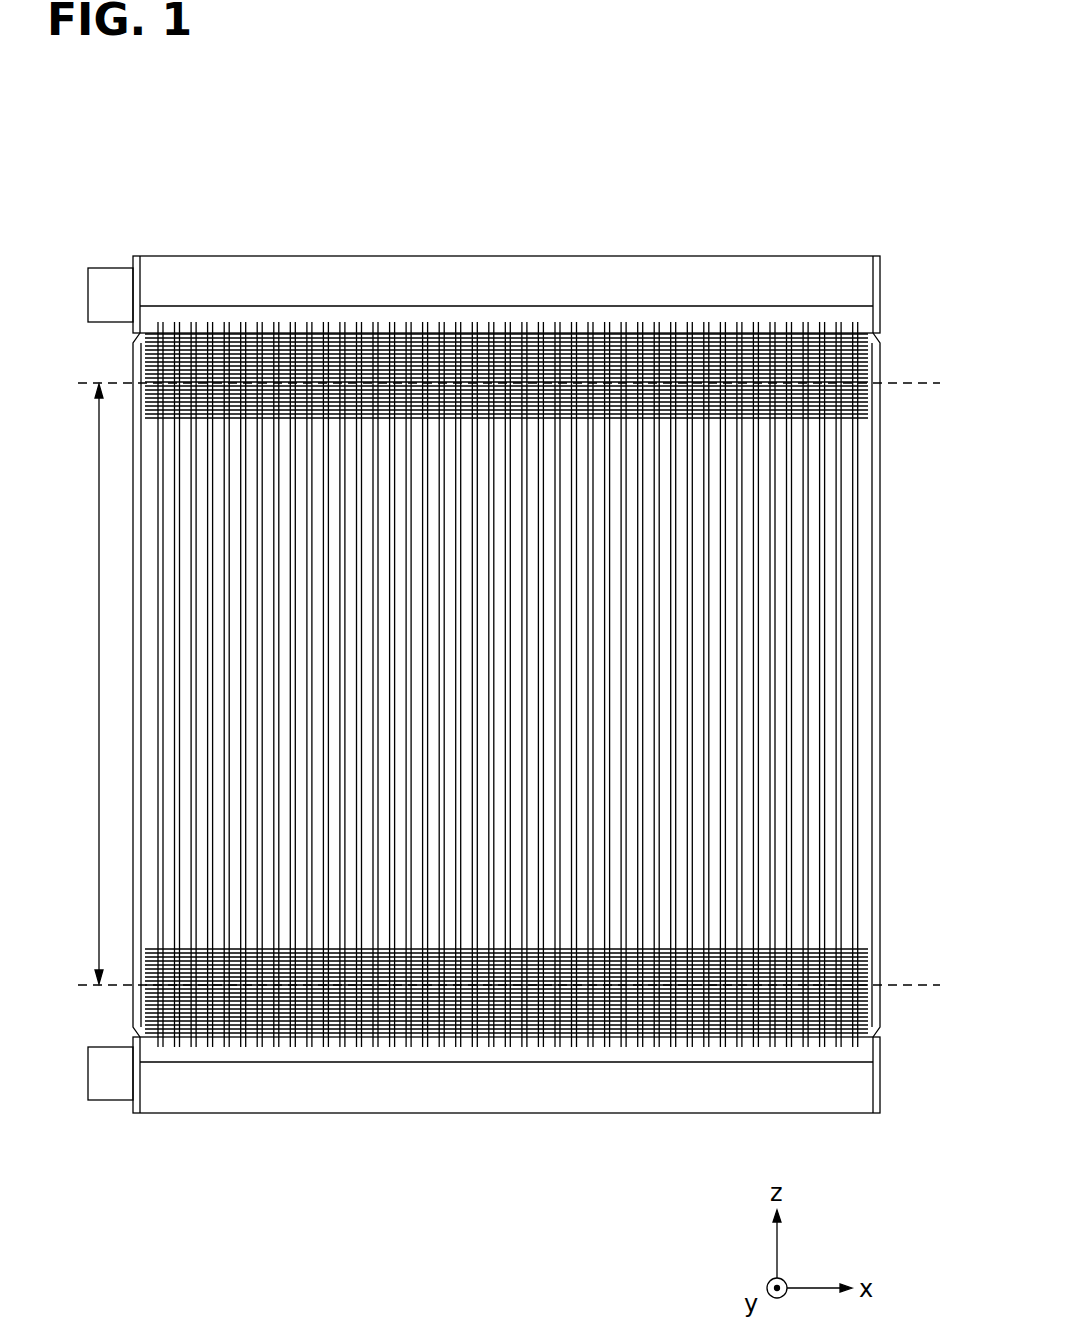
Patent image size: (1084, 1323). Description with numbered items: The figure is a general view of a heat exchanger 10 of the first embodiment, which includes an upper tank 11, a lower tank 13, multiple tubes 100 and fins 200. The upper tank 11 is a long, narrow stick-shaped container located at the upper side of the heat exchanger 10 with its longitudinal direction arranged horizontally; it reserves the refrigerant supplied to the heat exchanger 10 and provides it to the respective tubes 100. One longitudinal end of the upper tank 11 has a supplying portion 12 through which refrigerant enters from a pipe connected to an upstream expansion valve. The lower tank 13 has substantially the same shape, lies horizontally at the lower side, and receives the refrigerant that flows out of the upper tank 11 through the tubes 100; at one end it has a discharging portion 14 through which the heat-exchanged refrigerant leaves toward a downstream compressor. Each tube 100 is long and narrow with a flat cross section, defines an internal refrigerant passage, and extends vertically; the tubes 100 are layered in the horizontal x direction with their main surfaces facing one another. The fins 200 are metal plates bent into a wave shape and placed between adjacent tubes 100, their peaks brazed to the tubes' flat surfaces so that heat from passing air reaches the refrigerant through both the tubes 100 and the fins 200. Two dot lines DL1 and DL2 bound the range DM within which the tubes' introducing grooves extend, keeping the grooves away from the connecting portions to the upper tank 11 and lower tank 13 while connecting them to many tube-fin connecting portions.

The heat exchanger 10 is at (763, 209).
The upper tank 11 is at (538, 255).
The supplying portion 12 is at (117, 268).
The lower tank 13 is at (556, 1115).
The discharging portion 14 is at (112, 1102).
The tubes 100 is at (825, 715).
The fins 200 is at (846, 424).
The dot line DL1 is at (917, 381).
The dot line DL2 is at (917, 983).
The range DM is at (78, 684).